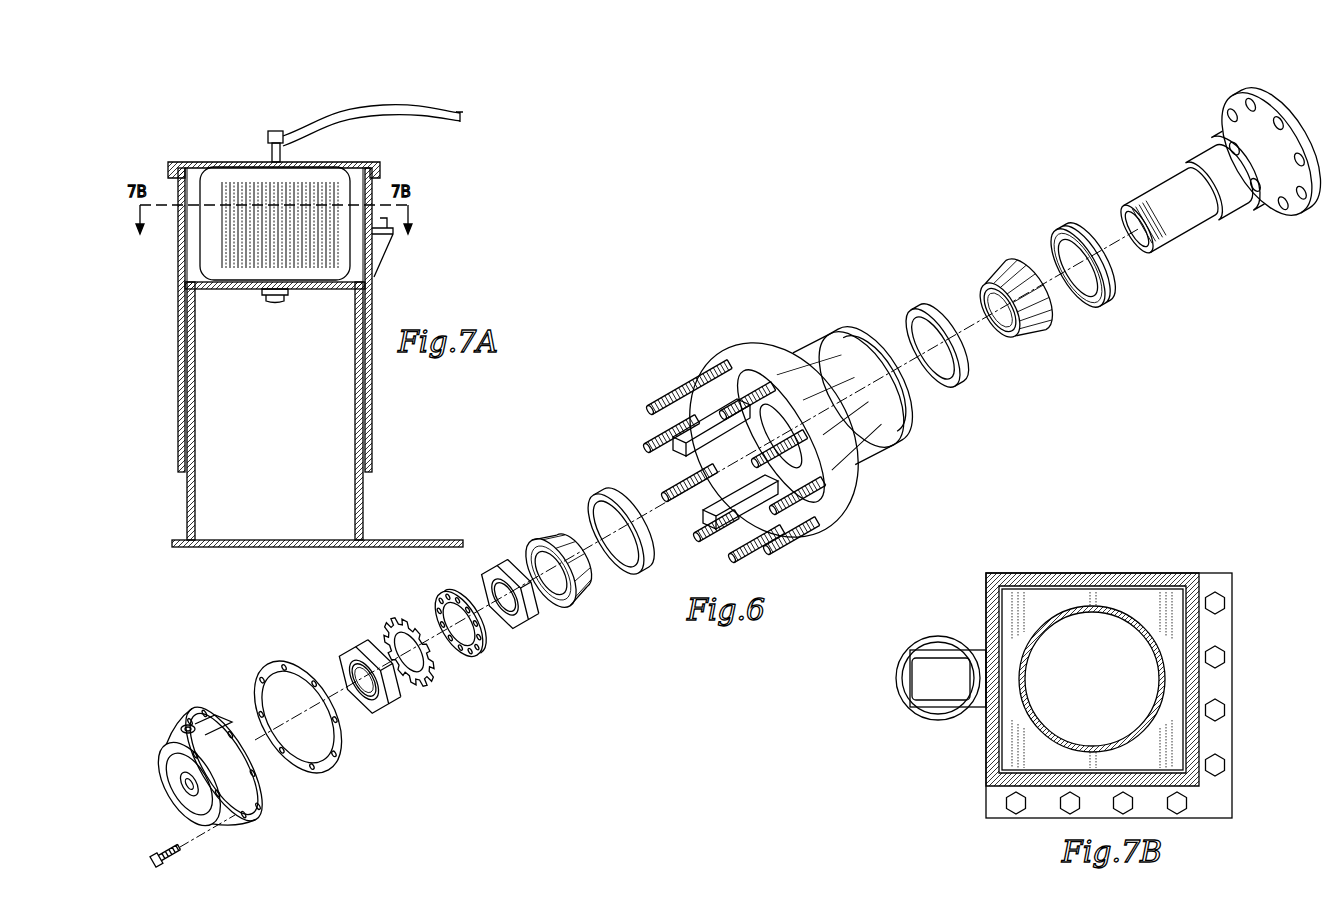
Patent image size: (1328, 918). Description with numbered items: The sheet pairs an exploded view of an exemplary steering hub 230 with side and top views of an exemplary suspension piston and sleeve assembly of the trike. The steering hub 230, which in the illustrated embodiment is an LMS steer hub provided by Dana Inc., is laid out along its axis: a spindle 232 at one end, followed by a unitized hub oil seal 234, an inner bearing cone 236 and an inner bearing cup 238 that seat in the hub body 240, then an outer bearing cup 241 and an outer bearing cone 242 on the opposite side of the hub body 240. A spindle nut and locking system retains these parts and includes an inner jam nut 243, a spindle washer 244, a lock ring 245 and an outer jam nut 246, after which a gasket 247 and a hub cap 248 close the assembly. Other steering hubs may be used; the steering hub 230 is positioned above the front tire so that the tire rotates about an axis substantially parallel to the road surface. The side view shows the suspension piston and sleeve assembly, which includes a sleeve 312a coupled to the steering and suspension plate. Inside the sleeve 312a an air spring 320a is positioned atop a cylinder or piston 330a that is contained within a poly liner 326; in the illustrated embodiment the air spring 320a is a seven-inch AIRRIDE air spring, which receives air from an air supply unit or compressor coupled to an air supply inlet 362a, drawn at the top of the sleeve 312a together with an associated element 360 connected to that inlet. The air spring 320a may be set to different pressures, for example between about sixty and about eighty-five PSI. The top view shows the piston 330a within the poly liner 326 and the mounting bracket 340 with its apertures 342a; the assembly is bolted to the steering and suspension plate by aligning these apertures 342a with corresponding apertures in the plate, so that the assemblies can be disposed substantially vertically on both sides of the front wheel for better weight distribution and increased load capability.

In FIG. 6, the steering hub 230 is at (786, 330).
In FIG. 6, the spindle 232 is at (1175, 198).
In FIG. 6, the unitized hub oil seal 234 is at (1068, 228).
In FIG. 6, the inner bearing cone 236 is at (992, 270).
In FIG. 6, the inner bearing cup 238 is at (925, 312).
In FIG. 6, the hub body 240 is at (716, 357).
In FIG. 6, the outer bearing cup 241 is at (604, 494).
In FIG. 6, the outer bearing cone 242 is at (583, 600).
In FIG. 6, the inner jam nut 243 is at (525, 630).
In FIG. 6, the spindle washer 244 is at (478, 655).
In FIG. 6, the lock ring 245 is at (440, 685).
In FIG. 6, the outer jam nut 246 is at (385, 712).
In FIG. 6, the gasket 247 is at (330, 765).
In FIG. 6, the hub cap 248 is at (255, 805).
In FIG. 7A, the sleeve 312a is at (374, 430).
In FIG. 7B, the sleeve 312a is at (1092, 573).
In FIG. 7A, the air spring 320a is at (215, 176).
In FIG. 7A, the poly liner 326 is at (365, 478).
In FIG. 7A, the cylinder or piston 330a is at (258, 418).
In FIG. 7B, the mounting bracket 340 is at (1215, 632).
In FIG. 7B, the apertures 342a is at (1215, 592).
In FIG. 7A, the hose 360 is at (455, 125).
In FIG. 7A, the air supply inlet 362a is at (283, 152).